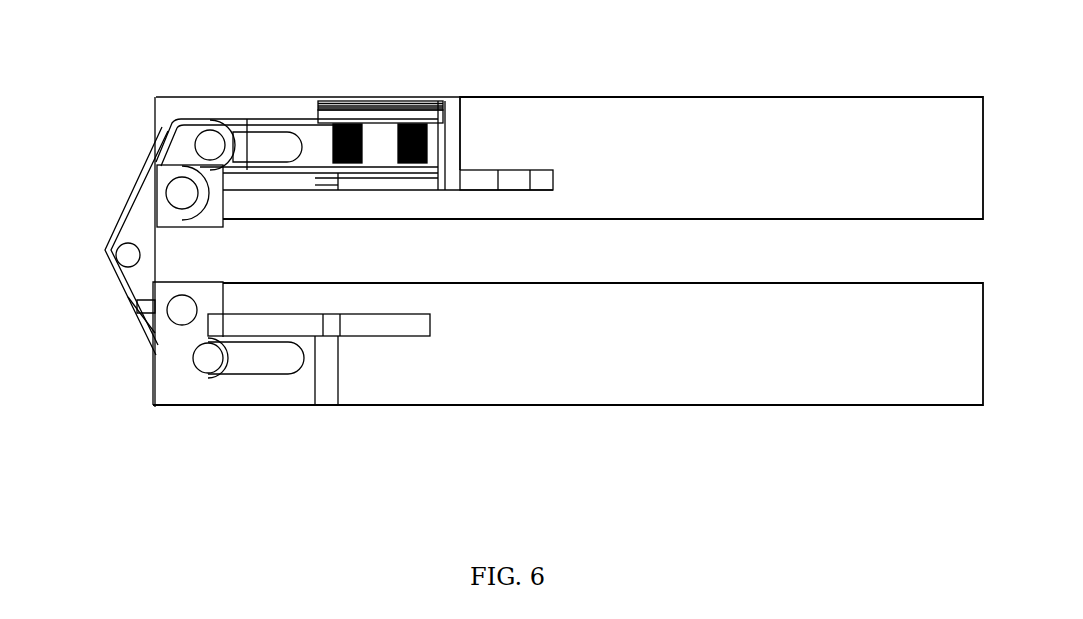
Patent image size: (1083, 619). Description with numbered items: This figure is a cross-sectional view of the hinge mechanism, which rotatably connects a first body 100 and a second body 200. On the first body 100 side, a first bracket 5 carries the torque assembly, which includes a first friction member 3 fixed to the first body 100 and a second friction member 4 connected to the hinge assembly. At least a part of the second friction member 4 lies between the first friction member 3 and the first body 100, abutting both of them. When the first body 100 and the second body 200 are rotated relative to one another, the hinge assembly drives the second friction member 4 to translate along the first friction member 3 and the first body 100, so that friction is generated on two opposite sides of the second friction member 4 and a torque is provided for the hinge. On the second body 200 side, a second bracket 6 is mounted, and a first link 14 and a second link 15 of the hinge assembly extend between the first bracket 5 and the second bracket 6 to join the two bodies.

The first body 100 is at (653, 127).
The second body 200 is at (620, 382).
The first bracket 5 is at (240, 107).
The first friction member 3 is at (393, 102).
The second friction member 4 is at (293, 165).
The first link 14 is at (135, 227).
The second link 15 is at (138, 322).
The second bracket 6 is at (303, 390).